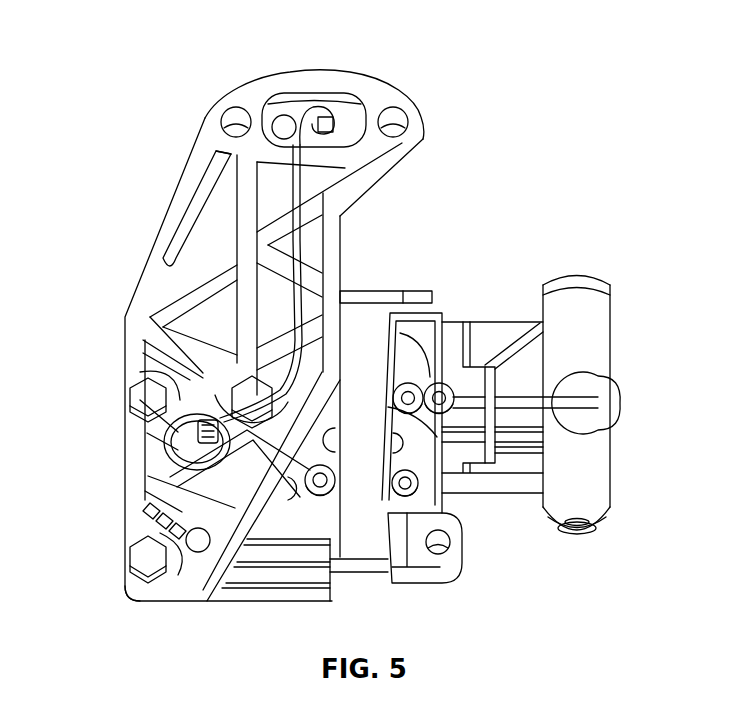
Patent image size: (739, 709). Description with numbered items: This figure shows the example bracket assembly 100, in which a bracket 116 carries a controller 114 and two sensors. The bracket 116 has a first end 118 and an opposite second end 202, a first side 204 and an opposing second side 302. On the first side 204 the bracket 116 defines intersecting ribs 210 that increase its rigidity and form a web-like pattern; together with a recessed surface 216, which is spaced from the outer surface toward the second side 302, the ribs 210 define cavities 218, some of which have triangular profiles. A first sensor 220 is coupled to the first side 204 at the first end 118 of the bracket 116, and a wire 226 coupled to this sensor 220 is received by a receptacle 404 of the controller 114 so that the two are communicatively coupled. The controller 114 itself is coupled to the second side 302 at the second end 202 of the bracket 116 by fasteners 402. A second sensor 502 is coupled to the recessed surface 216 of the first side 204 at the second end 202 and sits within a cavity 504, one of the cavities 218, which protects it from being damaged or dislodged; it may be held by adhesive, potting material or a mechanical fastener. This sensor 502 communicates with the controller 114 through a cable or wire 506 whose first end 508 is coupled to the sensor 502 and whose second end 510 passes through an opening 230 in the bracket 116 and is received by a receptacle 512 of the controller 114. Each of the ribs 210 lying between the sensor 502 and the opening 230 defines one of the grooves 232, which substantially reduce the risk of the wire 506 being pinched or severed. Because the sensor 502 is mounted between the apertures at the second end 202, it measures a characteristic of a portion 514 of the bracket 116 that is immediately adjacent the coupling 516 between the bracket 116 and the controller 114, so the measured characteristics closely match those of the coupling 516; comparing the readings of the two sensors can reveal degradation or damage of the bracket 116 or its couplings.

The bracket assembly 100 is at (433, 76).
The controller 114 is at (385, 290).
The bracket 116 is at (206, 114).
The first end 118 is at (317, 71).
The second end 202 is at (160, 590).
The first side 204 is at (393, 142).
The ribs 210 is at (200, 480).
The recessed surface 216 is at (217, 193).
The cavities 218 is at (197, 302).
The sensor 220 is at (284, 125).
The wire 226 is at (333, 200).
The opening 230 is at (300, 565).
The grooves 232 is at (147, 468).
The second side 302 is at (397, 180).
The fasteners 402 is at (147, 563).
The receptacle 404 is at (150, 317).
The sensor 502 is at (190, 532).
The cavity 504 is at (200, 553).
The wire 506 is at (147, 485).
The first end 508 is at (147, 505).
The second end 510 is at (130, 400).
The receptacle 512 is at (147, 377).
The portion 514 is at (237, 517).
The coupling 516 is at (117, 568).